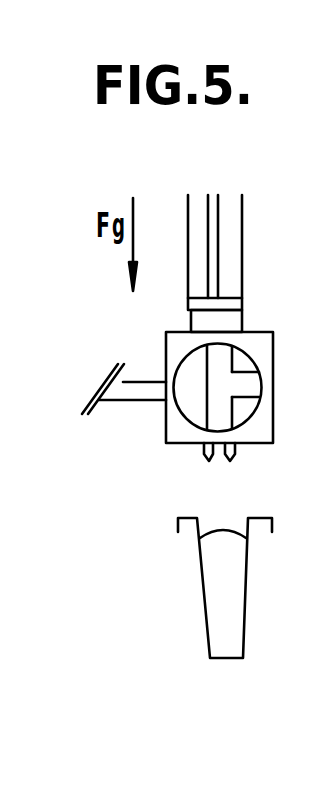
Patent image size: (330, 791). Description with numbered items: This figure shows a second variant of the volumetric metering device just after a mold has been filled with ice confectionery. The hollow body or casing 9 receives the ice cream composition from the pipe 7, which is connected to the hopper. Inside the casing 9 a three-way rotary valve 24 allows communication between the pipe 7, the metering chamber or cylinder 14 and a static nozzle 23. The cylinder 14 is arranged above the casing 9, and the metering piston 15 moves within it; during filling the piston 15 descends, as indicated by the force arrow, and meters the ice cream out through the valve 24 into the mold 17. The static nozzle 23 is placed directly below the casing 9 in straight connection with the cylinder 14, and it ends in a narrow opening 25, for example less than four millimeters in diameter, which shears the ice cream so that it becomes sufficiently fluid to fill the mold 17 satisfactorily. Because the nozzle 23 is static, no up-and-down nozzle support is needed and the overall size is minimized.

The pipe 7 is at (124, 392).
The hollow body 9 is at (257, 427).
The metering chamber 14 is at (240, 319).
The metering piston 15 is at (212, 262).
The mold 17 is at (248, 592).
The static nozzle 23 is at (203, 459).
The three-way rotary valve 24 is at (195, 402).
The narrow opening 25 is at (221, 462).